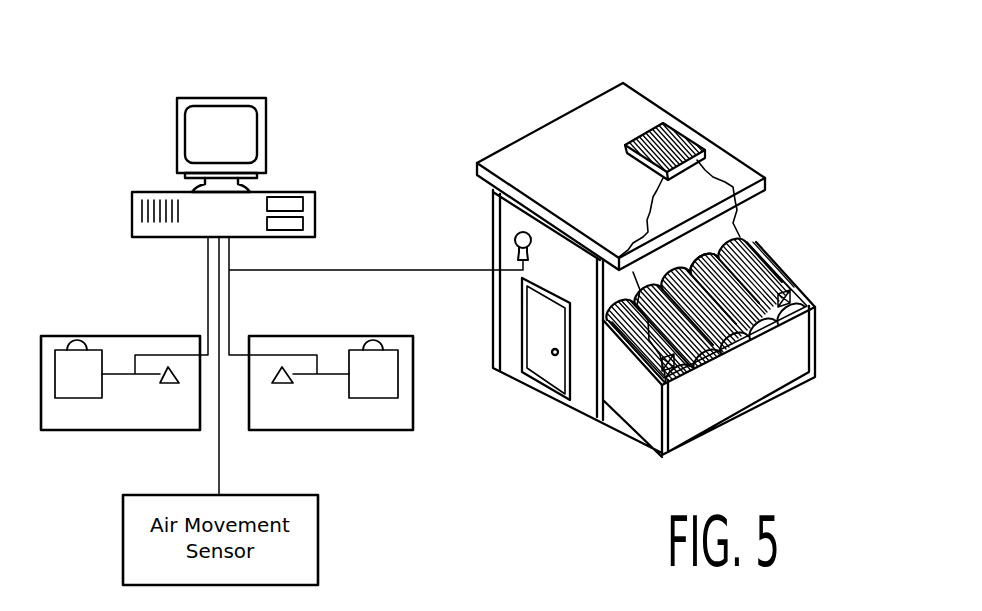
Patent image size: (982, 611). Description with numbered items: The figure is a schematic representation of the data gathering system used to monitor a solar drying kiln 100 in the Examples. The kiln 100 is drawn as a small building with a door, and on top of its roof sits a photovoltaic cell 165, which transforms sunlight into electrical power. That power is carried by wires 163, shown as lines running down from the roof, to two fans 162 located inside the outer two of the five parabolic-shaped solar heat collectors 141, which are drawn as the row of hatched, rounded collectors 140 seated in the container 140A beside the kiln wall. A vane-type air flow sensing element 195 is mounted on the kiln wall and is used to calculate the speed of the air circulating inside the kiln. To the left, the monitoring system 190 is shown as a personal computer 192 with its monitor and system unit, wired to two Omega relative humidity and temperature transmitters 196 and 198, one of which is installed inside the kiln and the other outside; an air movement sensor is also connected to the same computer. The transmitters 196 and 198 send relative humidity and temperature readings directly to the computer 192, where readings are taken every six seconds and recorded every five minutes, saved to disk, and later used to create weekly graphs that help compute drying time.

The kiln 100 is at (691, 70).
The stack of hay bales 140 is at (729, 261).
The bale container 140A is at (798, 340).
The parabolic-shaped solar heat collectors 141 is at (750, 235).
The fans 162 is at (668, 366).
The wires 163 is at (633, 237).
The photovoltaic cell 165 is at (683, 125).
The monitoring system 190 is at (217, 70).
The computer 192 is at (258, 162).
The vane-type air flow sensing element 195 is at (517, 248).
The relative humidity and temperature transmitter 196 is at (337, 432).
The relative humidity and temperature transmitter 198 is at (130, 432).